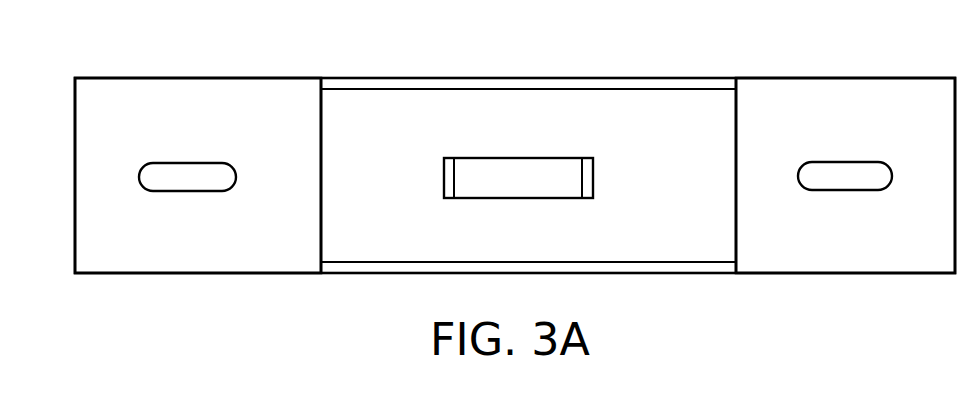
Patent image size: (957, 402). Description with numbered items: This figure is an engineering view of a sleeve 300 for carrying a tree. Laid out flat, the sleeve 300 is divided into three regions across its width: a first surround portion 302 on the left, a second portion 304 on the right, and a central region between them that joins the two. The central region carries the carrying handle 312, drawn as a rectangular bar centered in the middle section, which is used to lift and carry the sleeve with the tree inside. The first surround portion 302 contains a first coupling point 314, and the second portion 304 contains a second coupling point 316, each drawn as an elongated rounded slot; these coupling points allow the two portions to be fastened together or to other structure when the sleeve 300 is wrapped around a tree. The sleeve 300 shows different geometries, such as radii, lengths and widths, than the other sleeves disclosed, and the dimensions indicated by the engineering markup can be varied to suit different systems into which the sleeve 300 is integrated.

The sleeve 300 is at (104, 49).
The first surround portion 302 is at (139, 122).
The second portion 304 is at (939, 113).
The carrying handle 312 is at (542, 188).
The first coupling point 314 is at (208, 186).
The second coupling point 316 is at (866, 186).